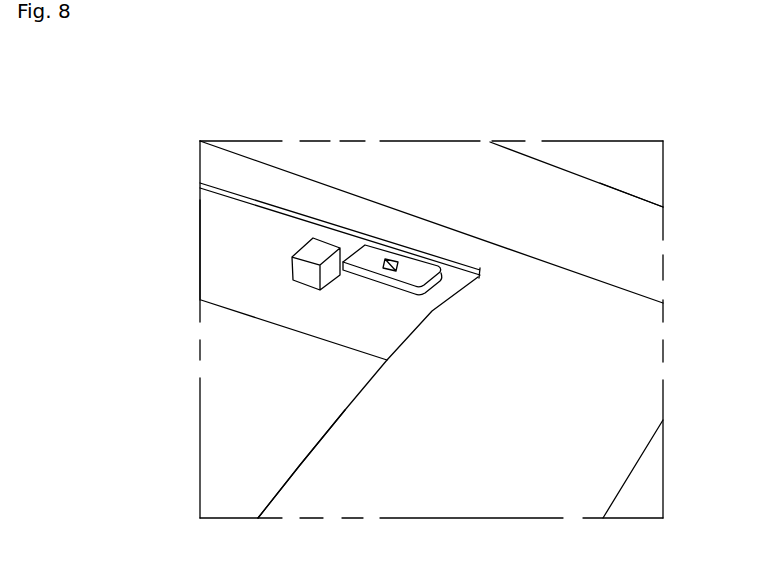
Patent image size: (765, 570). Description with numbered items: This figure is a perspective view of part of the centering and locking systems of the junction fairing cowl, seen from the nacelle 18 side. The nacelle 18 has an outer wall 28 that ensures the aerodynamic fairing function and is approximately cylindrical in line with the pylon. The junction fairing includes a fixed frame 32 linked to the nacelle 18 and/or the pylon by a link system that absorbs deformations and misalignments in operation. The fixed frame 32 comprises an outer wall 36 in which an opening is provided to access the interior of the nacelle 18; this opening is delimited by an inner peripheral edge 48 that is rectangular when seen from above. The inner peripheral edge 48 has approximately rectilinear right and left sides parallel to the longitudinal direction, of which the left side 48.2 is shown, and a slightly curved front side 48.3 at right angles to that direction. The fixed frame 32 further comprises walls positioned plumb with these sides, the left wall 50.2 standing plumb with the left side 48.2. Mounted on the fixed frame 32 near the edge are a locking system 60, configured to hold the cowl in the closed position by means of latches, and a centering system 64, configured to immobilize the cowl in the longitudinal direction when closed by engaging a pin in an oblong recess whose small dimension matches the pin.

The nacelle 18 is at (529, 199).
The outer wall 28 is at (618, 213).
The fixed frame 32 is at (565, 383).
The outer wall 36 is at (260, 188).
The inner peripheral edge 48 is at (324, 418).
The left side 48.2 is at (306, 210).
The front side 48.3 is at (300, 465).
The left wall 50.2 is at (250, 242).
The locking system 60 is at (325, 248).
The centering system 64 is at (417, 272).